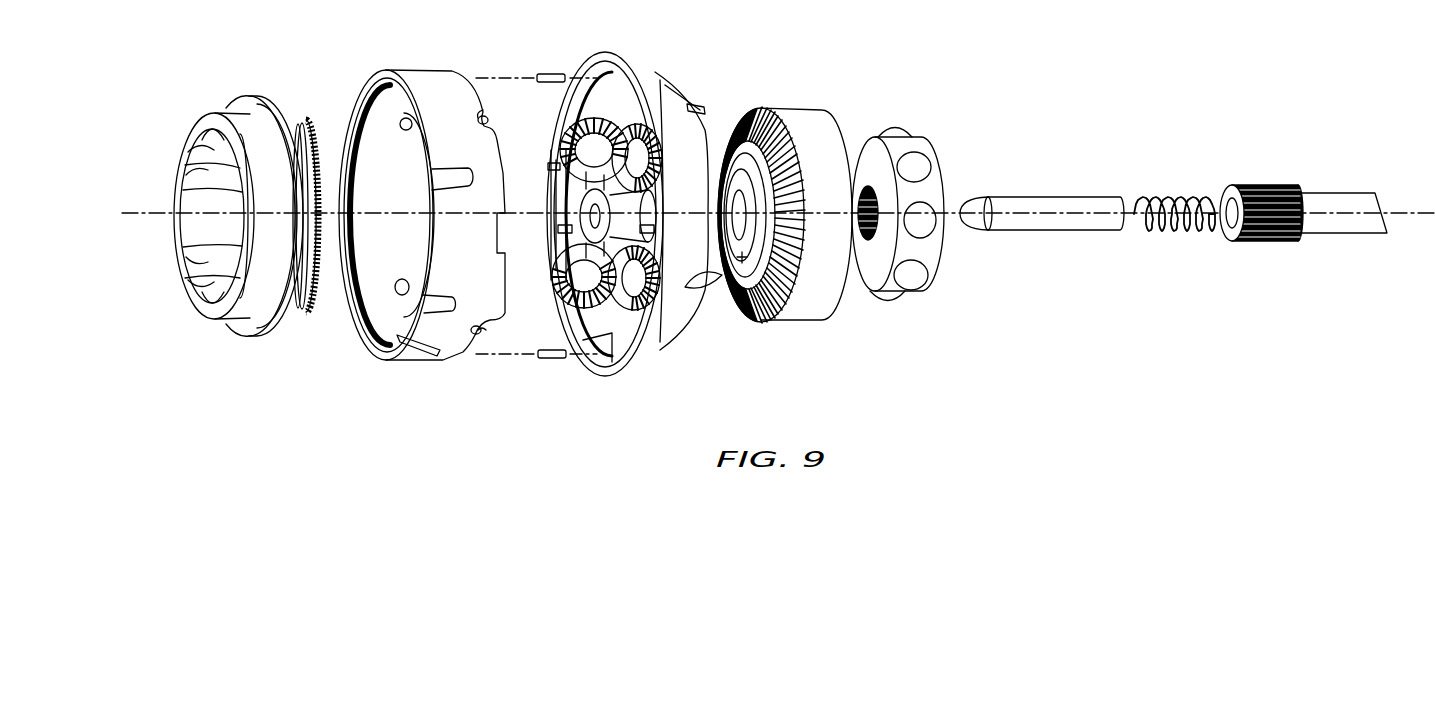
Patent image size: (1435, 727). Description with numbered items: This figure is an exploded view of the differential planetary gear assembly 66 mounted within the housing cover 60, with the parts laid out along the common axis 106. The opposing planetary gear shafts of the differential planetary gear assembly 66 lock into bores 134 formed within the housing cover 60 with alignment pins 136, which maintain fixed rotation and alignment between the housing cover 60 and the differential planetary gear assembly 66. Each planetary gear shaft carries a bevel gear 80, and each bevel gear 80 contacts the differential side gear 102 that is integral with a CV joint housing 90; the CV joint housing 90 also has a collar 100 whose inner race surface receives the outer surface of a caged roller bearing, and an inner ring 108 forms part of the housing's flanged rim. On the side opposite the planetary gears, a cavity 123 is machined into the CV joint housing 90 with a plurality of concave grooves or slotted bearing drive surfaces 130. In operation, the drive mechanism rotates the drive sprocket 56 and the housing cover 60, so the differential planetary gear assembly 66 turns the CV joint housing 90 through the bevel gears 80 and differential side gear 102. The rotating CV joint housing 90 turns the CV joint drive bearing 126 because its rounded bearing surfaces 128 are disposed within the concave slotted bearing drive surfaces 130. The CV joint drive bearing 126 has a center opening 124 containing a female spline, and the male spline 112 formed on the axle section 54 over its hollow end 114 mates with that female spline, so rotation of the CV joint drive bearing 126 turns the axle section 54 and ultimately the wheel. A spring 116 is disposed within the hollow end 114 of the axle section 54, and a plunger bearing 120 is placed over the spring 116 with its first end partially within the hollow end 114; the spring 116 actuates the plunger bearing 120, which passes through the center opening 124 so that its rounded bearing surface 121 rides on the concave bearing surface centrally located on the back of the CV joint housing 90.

The axle section 54 is at (1335, 207).
The drive sprocket 56 is at (640, 363).
The housing cover 60 is at (420, 88).
The differential planetary gear assembly 66 is at (585, 198).
The bevel gear 80 is at (568, 138).
The CV joint housing 90 is at (822, 92).
The collar 100 is at (723, 293).
The differential side gear 102 is at (313, 150).
The axis 106 is at (158, 215).
The flange rim 108 is at (275, 102).
The spline 112 is at (1265, 192).
The hollow end 114 is at (1217, 246).
The spring 116 is at (1170, 198).
The plunger bearing 120 is at (1052, 207).
The rounded bearing surface 121 is at (963, 213).
The cavity 123 is at (223, 228).
The center opening 124 is at (863, 192).
The CV joint drive bearing 126 is at (935, 189).
The rounded bearing surfaces 128 is at (895, 128).
The slotted bearing drive surfaces 130 is at (198, 268).
The bores 134 is at (490, 128).
The alignment pins 136 is at (553, 75).